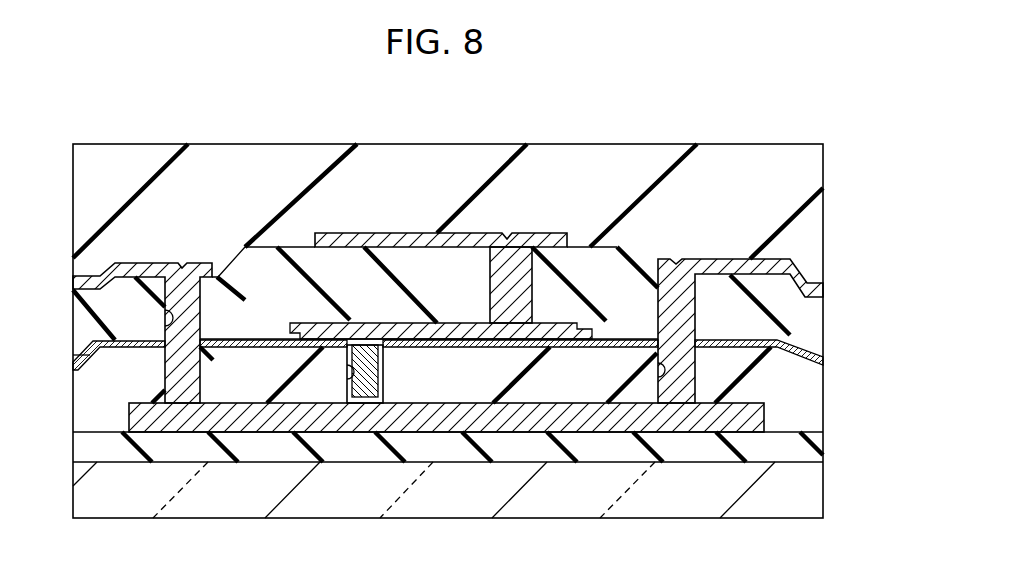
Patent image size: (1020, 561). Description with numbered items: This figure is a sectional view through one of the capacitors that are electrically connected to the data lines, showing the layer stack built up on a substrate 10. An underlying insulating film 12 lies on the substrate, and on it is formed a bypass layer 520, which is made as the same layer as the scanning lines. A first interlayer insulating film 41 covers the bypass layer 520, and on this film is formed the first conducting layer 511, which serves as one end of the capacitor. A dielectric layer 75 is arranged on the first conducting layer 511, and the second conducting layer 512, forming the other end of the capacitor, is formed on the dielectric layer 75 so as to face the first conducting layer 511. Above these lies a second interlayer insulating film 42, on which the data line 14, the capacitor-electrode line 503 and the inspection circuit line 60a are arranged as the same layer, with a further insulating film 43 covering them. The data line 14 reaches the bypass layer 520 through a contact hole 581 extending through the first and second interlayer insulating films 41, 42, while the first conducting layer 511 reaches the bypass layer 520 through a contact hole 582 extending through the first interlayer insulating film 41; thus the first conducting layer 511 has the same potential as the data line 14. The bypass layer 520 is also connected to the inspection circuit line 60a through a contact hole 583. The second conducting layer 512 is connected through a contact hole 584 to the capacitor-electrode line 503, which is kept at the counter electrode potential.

The substrate 10 is at (805, 490).
The underlying insulating film 12 is at (802, 445).
The bypass layer 520 is at (747, 420).
The first interlayer insulating film 41 is at (802, 390).
The dielectric layer 75 is at (822, 356).
The first conducting layer 511 is at (450, 348).
The second conducting layer 512 is at (443, 323).
The second interlayer insulating film 42 is at (797, 313).
The third interlayer insulating film 43 is at (800, 178).
The data line 14 is at (155, 268).
The capacitor-electrode line 503 is at (373, 240).
The inspection circuit line 60a is at (703, 267).
The contact hole 581 is at (173, 313).
The contact hole 582 is at (345, 375).
The contact hole 583 is at (660, 372).
The contact hole 584 is at (525, 266).